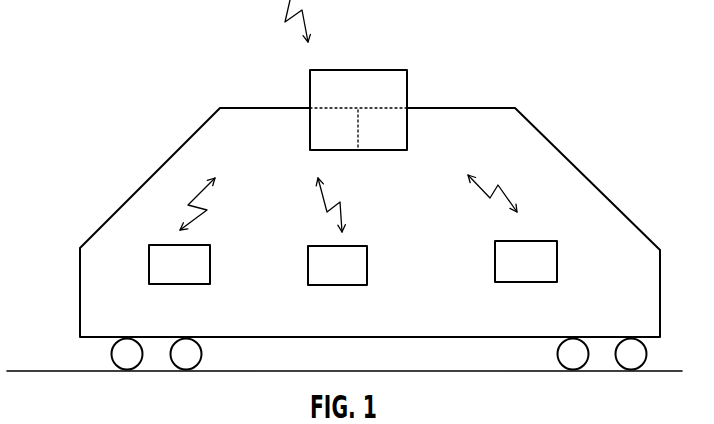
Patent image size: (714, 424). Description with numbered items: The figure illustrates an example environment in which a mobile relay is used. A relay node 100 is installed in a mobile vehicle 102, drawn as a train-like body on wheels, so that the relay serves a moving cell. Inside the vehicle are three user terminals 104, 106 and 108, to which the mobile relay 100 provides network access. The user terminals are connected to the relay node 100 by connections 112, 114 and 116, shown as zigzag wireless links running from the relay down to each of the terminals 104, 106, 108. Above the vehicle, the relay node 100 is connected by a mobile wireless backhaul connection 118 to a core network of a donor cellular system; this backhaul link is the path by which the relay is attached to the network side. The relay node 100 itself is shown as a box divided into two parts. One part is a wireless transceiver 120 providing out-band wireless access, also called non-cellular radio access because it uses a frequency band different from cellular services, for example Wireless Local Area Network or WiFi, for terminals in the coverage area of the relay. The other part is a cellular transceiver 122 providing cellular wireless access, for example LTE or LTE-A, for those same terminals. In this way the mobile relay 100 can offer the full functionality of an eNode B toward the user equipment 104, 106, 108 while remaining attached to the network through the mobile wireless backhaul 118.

The relay node 100 is at (408, 76).
The mobile vehicle 102 is at (542, 132).
The user terminal 104 is at (160, 284).
The user terminal 106 is at (318, 285).
The user terminal 108 is at (505, 282).
The connection 112 is at (192, 204).
The connection 114 is at (342, 203).
The connection 116 is at (483, 189).
The mobile wireless backhaul connection 118 is at (283, 8).
The wireless transceiver 120 is at (408, 120).
The cellular transceiver 122 is at (309, 118).